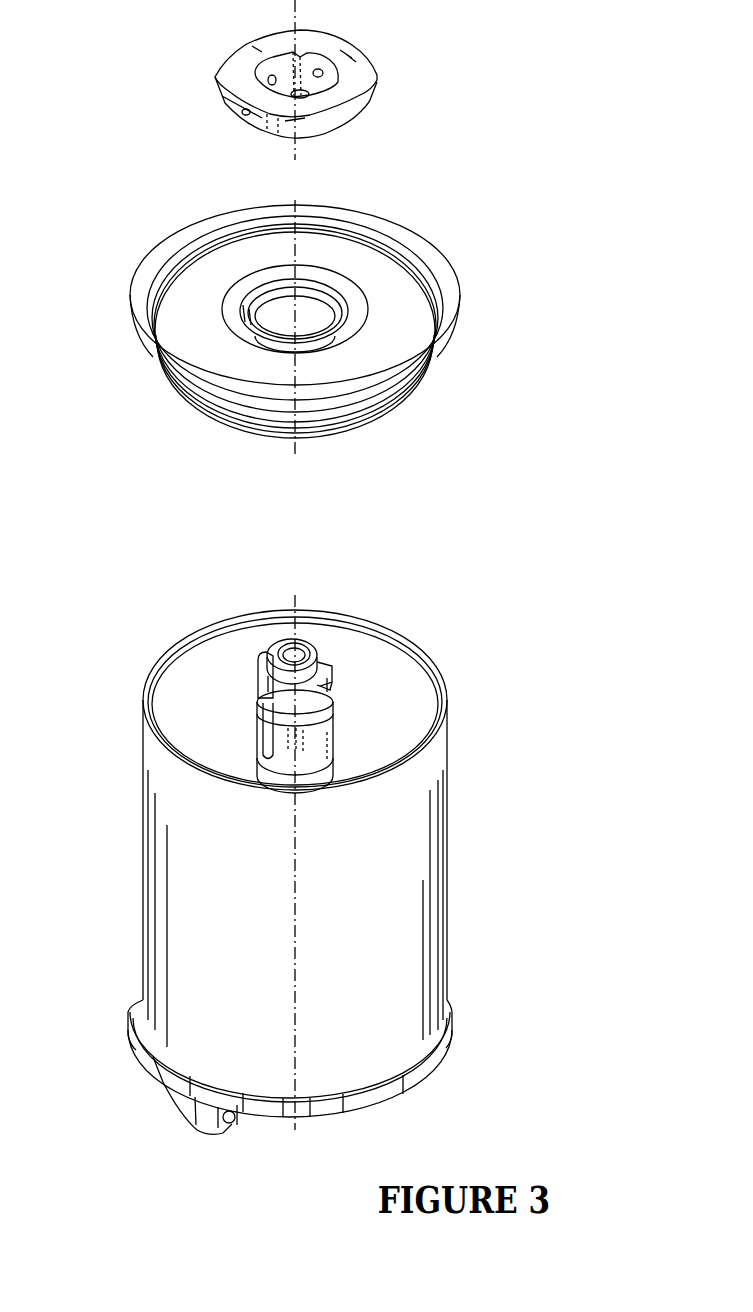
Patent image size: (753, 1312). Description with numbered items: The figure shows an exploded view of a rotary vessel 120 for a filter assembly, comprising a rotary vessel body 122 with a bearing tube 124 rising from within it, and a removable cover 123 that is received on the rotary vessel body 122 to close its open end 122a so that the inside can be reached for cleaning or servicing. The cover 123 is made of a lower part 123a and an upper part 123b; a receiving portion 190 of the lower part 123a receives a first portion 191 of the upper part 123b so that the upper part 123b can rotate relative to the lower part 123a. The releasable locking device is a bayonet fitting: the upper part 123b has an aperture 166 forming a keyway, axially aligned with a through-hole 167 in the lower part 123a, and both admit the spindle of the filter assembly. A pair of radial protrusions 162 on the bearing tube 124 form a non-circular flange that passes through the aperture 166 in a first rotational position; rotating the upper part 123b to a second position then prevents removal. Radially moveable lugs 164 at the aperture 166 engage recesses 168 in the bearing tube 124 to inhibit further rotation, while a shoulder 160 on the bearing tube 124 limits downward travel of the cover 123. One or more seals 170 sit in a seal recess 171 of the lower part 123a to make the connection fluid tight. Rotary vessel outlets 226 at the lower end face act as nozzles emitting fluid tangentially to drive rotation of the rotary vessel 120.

The rotary vessel 120 is at (470, 757).
The rotary vessel body 122 is at (408, 862).
The open end 122a is at (150, 687).
The cover 123 is at (464, 77).
The lower part 123a is at (345, 248).
The upper part 123b is at (372, 88).
The bearing tube 124 is at (317, 640).
The shoulder 160 is at (257, 695).
The radial protrusions 162 is at (257, 648).
The radially moveable lugs 164 is at (324, 70).
The aperture 166 is at (308, 95).
The through-hole 167 is at (283, 334).
The recesses 168 is at (318, 696).
The seals 170 is at (397, 412).
The seal recess 171 is at (430, 390).
The receiving portion 190 is at (310, 297).
The first portion 191 is at (218, 96).
The rotary vessel outlets 226 is at (237, 1118).